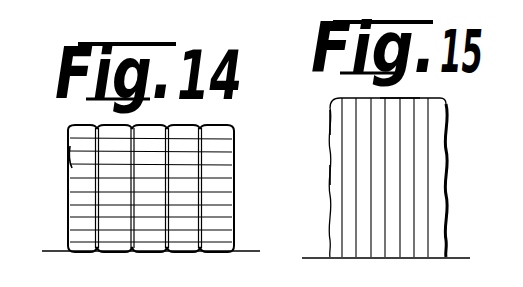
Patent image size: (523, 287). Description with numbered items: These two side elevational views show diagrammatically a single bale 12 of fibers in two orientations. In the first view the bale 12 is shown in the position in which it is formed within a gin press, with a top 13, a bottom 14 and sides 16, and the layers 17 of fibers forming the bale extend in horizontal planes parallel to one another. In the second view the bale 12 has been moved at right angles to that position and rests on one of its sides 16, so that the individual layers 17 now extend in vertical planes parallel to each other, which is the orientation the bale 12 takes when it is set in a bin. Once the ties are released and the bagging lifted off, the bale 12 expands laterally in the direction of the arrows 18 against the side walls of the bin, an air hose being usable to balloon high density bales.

In FIG. 14, the bale 12 is at (213, 211).
In FIG. 15, the bale 12 is at (432, 144).
In FIG. 14, the top 13 is at (160, 114).
In FIG. 14, the bottom 14 is at (150, 249).
In FIG. 14, the sides 16 is at (72, 192).
In FIG. 15, the sides 16 is at (408, 97).
In FIG. 14, the layers 17 is at (66, 165).
In FIG. 15, the layers 17 is at (355, 118).
In FIG. 15, the arrows 18 is at (320, 168).